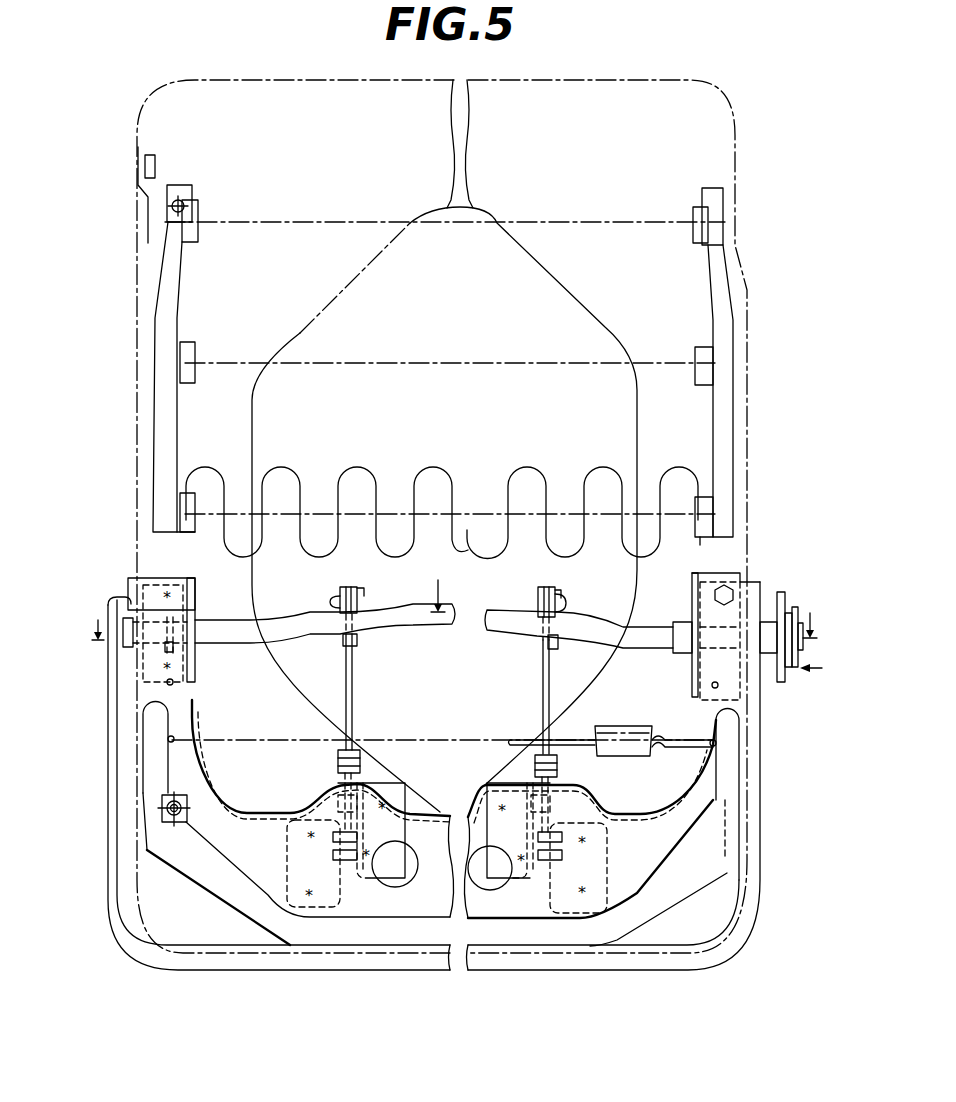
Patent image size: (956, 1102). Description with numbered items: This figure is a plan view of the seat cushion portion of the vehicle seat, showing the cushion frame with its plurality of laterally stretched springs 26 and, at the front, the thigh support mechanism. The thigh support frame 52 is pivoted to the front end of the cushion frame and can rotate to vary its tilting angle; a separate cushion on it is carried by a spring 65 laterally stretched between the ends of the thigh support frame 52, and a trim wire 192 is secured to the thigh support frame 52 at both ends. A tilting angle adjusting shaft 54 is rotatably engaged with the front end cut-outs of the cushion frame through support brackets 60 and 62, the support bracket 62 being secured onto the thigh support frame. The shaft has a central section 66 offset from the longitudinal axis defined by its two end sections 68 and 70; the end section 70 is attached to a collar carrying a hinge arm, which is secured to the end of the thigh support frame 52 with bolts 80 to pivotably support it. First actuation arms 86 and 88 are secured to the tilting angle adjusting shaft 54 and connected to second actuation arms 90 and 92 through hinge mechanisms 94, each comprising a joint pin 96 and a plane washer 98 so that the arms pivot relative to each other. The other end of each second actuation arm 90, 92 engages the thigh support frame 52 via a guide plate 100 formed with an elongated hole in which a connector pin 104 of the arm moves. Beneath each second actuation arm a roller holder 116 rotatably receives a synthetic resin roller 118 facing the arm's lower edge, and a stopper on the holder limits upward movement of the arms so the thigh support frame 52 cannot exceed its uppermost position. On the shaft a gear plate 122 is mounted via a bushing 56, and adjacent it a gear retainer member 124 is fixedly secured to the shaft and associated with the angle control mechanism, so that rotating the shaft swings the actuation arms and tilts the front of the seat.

The laterally stretched springs 26 is at (360, 467).
The thigh support frame 52 is at (760, 753).
The tilting angle adjusting shaft 54 is at (310, 610).
The bushing 56 is at (680, 653).
The support bracket 60 is at (147, 656).
The support bracket 62 is at (735, 683).
The spring 65 is at (677, 748).
The central section 66 is at (498, 623).
The end section 68 is at (118, 622).
The end section 70 is at (802, 645).
The bolts 80 is at (727, 587).
The first actuation arm 86 is at (340, 645).
The first actuation arm 88 is at (556, 643).
The second actuation arm 90 is at (353, 708).
The second actuation arm 92 is at (543, 708).
The hinge mechanisms 94 is at (369, 583).
The joint pins 96 is at (340, 600).
The plane washers 98 is at (365, 606).
The guide plate 100 is at (300, 900).
The connector pin 104 is at (350, 867).
The roller holder 116 is at (393, 760).
The roller 118 is at (323, 783).
The gear plate 122 is at (783, 598).
The gear retainer member 124 is at (798, 612).
The trim wire 192 is at (105, 846).